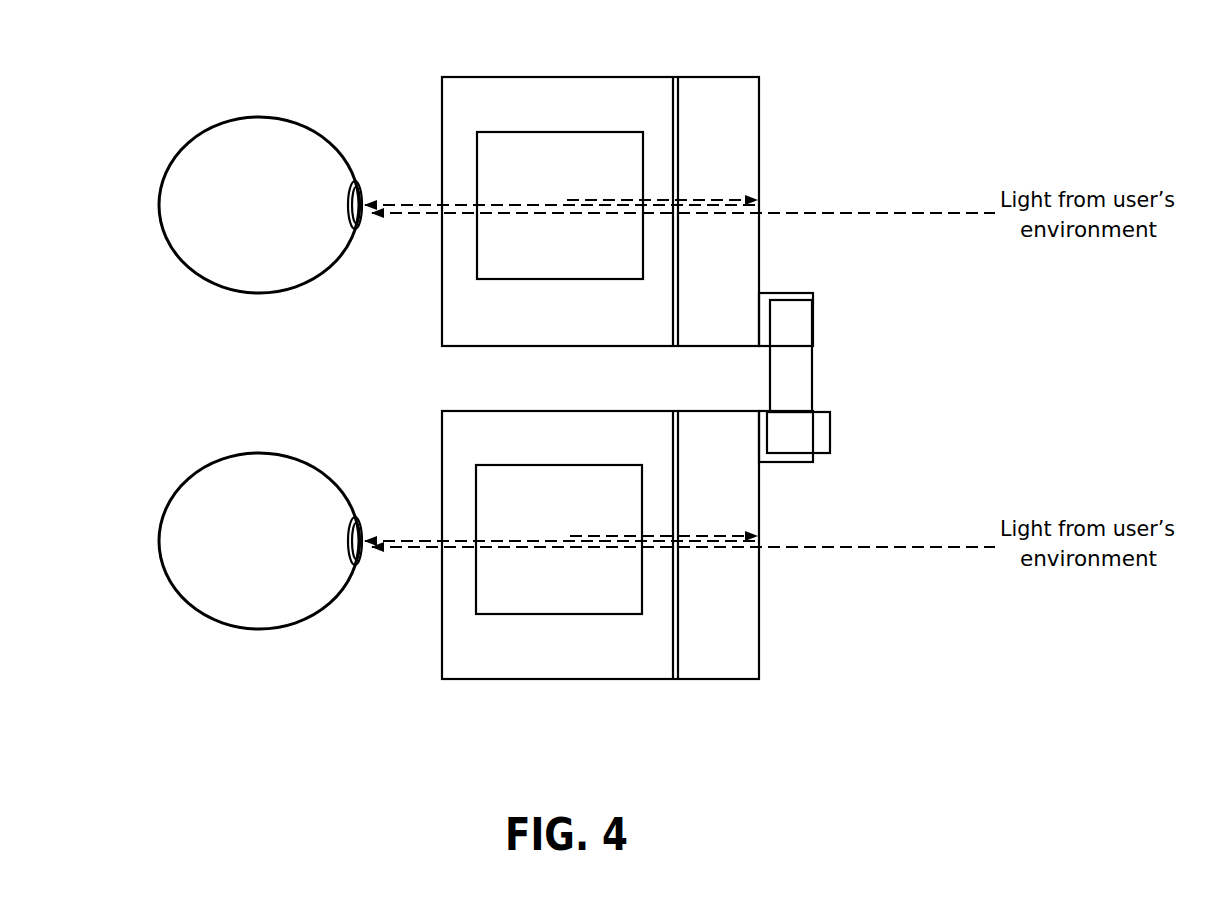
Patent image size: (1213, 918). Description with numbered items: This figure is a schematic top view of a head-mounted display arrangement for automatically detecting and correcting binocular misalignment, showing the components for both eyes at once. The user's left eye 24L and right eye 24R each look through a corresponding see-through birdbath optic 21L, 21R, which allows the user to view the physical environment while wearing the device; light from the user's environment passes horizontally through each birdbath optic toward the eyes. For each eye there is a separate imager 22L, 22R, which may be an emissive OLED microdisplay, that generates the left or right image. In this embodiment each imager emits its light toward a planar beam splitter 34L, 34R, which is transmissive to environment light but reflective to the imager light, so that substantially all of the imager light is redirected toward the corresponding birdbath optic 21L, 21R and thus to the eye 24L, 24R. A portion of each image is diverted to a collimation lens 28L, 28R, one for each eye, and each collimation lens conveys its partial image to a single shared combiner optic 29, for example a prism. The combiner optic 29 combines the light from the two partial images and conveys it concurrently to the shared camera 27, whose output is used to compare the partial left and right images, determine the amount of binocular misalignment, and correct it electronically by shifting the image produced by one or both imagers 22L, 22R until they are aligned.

The left eye 24L is at (303, 120).
The right eye 24R is at (303, 455).
The left birdbath optic 21L is at (759, 130).
The right birdbath optic 21R is at (759, 630).
The left imager 22L is at (528, 132).
The right imager 22R is at (527, 465).
The left beam splitter 34L is at (592, 77).
The right beam splitter 34R is at (616, 680).
The left collimation lens 28L is at (801, 293).
The right collimation lens 28R is at (813, 458).
The combiner optic 29 is at (813, 355).
The camera 27 is at (830, 427).